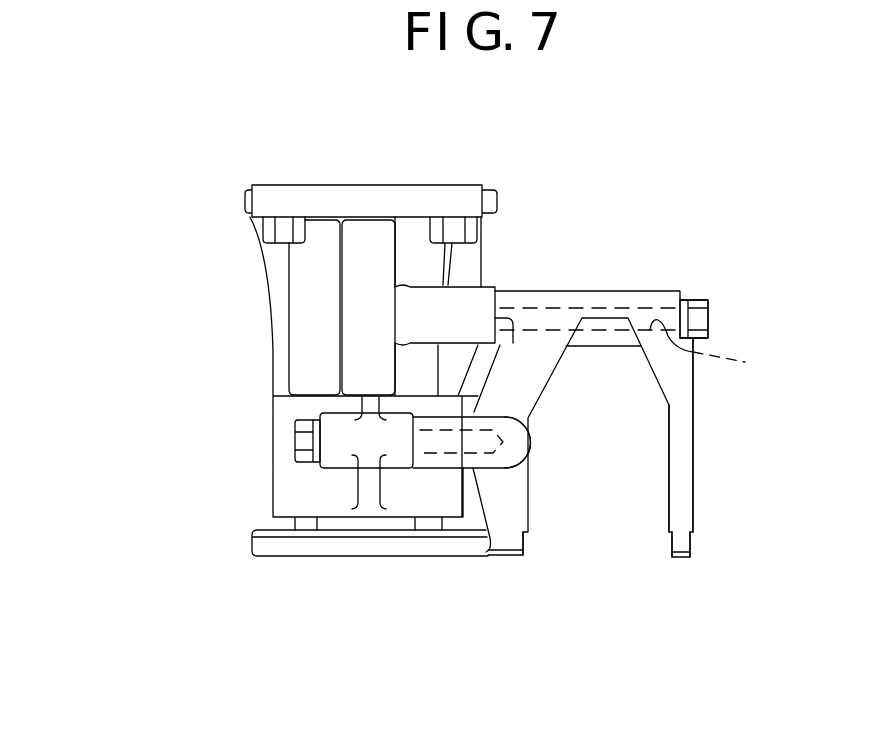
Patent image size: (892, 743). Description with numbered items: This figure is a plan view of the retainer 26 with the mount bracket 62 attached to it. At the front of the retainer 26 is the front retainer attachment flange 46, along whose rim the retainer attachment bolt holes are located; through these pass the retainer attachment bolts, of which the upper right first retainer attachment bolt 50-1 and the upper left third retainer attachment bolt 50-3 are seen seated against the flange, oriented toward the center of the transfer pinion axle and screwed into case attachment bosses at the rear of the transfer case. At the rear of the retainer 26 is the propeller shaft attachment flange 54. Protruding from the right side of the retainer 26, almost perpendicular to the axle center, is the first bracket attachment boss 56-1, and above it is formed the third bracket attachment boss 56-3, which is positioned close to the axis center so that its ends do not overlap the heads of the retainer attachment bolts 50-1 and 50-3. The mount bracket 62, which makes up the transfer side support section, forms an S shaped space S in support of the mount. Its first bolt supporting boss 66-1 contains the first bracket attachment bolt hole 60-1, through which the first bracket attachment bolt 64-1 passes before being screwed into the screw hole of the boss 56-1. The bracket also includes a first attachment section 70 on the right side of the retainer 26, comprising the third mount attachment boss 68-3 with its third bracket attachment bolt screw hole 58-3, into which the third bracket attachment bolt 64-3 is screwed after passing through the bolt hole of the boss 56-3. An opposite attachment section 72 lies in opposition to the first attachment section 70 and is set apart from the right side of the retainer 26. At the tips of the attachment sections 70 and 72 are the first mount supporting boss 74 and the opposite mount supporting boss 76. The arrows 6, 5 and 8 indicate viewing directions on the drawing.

The front retainer attachment flange 46 is at (250, 196).
The NO. 1 retainer attachment bolt 50-1 is at (477, 236).
The NO. 3 retainer attachment bolt 50-3 is at (283, 232).
The retainer 26 is at (262, 317).
The direction arrow 6 is at (196, 380).
The NO. 1 bracket attachment boss 56-1 is at (468, 305).
The NO. 1 bolt supporting boss 66-1 is at (588, 297).
The mount bracket 62 is at (657, 292).
The NO. 1 bracket attachment bolt 64-1 is at (700, 322).
The NO. 1 bracket attachment bolt hole 60-1 is at (736, 348).
The first attachment section 70 is at (528, 383).
The direction arrow 5 is at (724, 410).
The opposite attachment section 72 is at (687, 500).
The opposite mount supporting boss 76 is at (682, 548).
The first mount supporting boss 74 is at (510, 543).
The S shaped space S is at (621, 503).
The NO. 3 mount attachment boss 68-3 is at (513, 465).
The NO. 3 bracket attachment bolt screw hole 58-3 is at (442, 452).
The NO. 3 bracket attachment boss 56-3 is at (342, 467).
The NO. 3 bracket attachment bolt 64-3 is at (298, 440).
The propeller shaft attachment flange 54 is at (262, 543).
The direction arrow 8 is at (423, 583).